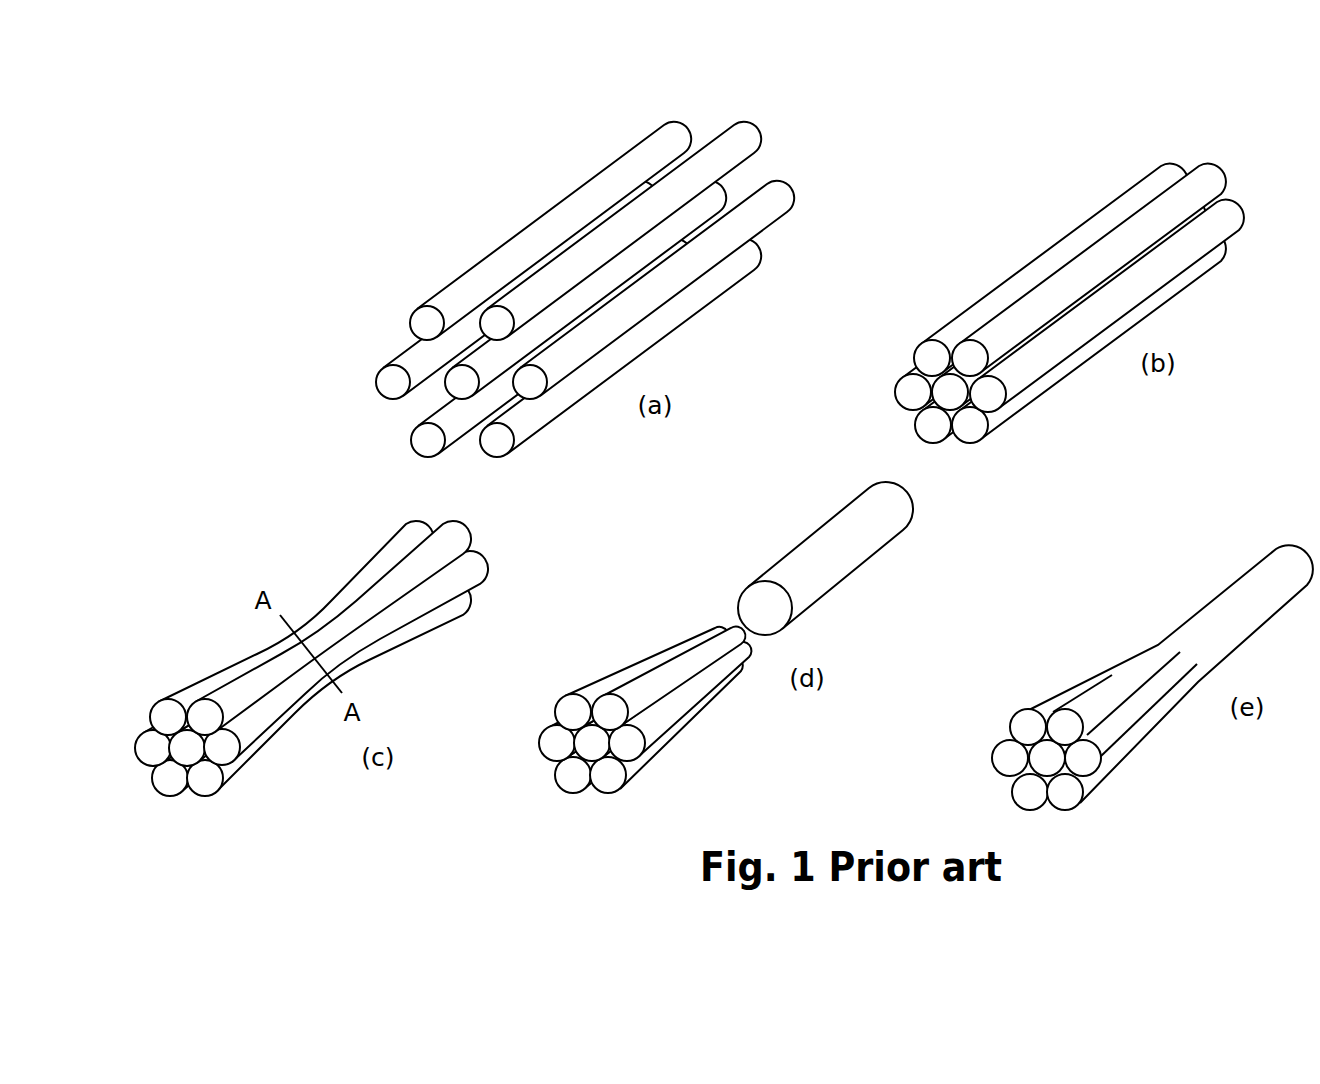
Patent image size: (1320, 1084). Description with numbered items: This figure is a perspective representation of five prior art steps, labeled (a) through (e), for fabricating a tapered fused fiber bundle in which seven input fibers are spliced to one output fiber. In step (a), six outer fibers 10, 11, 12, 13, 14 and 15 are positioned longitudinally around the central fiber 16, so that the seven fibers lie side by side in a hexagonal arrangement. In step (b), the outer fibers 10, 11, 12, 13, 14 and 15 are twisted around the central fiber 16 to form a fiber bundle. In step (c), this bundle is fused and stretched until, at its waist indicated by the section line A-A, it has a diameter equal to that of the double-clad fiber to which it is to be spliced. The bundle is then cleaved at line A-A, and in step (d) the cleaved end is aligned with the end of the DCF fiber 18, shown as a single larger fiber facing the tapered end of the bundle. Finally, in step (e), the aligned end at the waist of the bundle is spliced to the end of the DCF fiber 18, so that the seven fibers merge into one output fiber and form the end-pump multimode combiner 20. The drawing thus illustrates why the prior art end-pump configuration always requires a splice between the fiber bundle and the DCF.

The outer fiber 10 is at (466, 280).
The outer fiber 11 is at (735, 148).
The outer fiber 12 is at (777, 208).
The outer fiber 13 is at (712, 295).
The outer fiber 14 is at (452, 437).
The outer fiber 15 is at (403, 352).
The central fiber 16 is at (460, 383).
The DCF fiber 18 is at (843, 565).
The end-pump multimode combiner 20 is at (1151, 581).